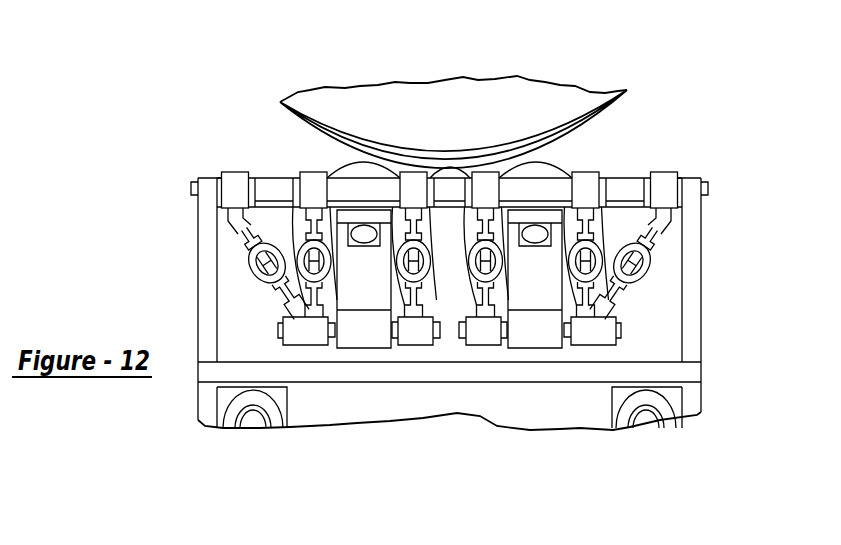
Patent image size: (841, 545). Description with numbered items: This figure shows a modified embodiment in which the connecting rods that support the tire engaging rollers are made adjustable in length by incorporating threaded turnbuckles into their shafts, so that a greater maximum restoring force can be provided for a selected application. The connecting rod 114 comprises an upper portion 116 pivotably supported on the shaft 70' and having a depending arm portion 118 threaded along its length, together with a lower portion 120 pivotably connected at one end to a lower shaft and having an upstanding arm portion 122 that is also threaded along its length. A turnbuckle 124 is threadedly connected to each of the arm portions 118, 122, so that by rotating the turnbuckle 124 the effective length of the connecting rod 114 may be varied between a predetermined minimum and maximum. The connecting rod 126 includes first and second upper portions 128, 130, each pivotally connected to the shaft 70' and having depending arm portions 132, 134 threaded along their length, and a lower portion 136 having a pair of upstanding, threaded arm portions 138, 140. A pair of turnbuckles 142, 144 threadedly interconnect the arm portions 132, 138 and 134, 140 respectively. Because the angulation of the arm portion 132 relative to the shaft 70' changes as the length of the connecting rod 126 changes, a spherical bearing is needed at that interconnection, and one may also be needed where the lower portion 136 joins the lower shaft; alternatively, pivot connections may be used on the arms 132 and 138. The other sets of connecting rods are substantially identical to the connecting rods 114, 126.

The shaft 70' is at (511, 136).
The connecting rod 114 is at (488, 198).
The upper portion 116 is at (483, 212).
The depending arm portion 118 is at (446, 137).
The lower portion 120 is at (483, 335).
The upstanding arm portion 122 is at (439, 389).
The turnbuckle 124 is at (509, 263).
The connecting rod 126 is at (680, 172).
The first upper portion 128 is at (668, 190).
The second upper portion 130 is at (620, 196).
The depending arm portion 132 is at (657, 238).
The depending arm portion 134 is at (680, 254).
The lower portion 136 is at (600, 338).
The upstanding arm portion 138 is at (682, 311).
The upstanding arm portion 140 is at (600, 306).
The turnbuckle 142 is at (655, 268).
The turnbuckle 144 is at (625, 284).